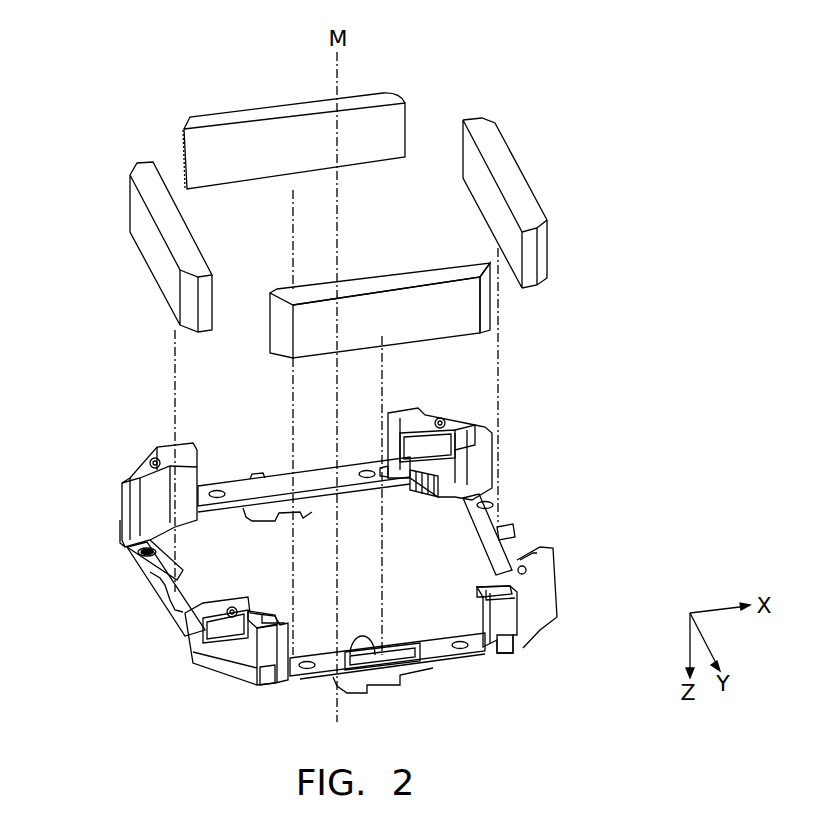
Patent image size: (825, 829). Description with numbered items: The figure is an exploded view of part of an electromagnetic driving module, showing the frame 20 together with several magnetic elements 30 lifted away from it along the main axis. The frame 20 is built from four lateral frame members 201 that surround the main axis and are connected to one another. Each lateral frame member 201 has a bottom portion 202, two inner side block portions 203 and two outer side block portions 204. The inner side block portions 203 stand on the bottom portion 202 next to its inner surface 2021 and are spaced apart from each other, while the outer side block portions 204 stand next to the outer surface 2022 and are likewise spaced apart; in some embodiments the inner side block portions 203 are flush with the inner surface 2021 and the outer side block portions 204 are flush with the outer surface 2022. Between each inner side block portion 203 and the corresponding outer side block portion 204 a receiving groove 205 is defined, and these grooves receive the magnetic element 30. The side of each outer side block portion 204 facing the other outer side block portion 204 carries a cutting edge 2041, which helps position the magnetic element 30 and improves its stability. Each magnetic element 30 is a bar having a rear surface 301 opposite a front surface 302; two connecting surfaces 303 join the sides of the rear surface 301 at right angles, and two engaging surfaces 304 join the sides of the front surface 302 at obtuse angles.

The frame 20 is at (112, 440).
The magnetic element 30 is at (376, 233).
The rear surface 301 is at (480, 180).
The front surface 302 is at (537, 197).
The connecting surface 303 is at (267, 333).
The engaging surface 304 is at (285, 348).
The lateral frame member 201 is at (512, 511).
The bottom portion 202 is at (438, 650).
The inner surface 2021 is at (362, 640).
The outer surface 2022 is at (293, 687).
The inner side block portion 203 is at (270, 615).
The outer side block portion 204 is at (500, 617).
The cutting edge 2041 is at (285, 633).
The receiving groove 205 is at (282, 617).